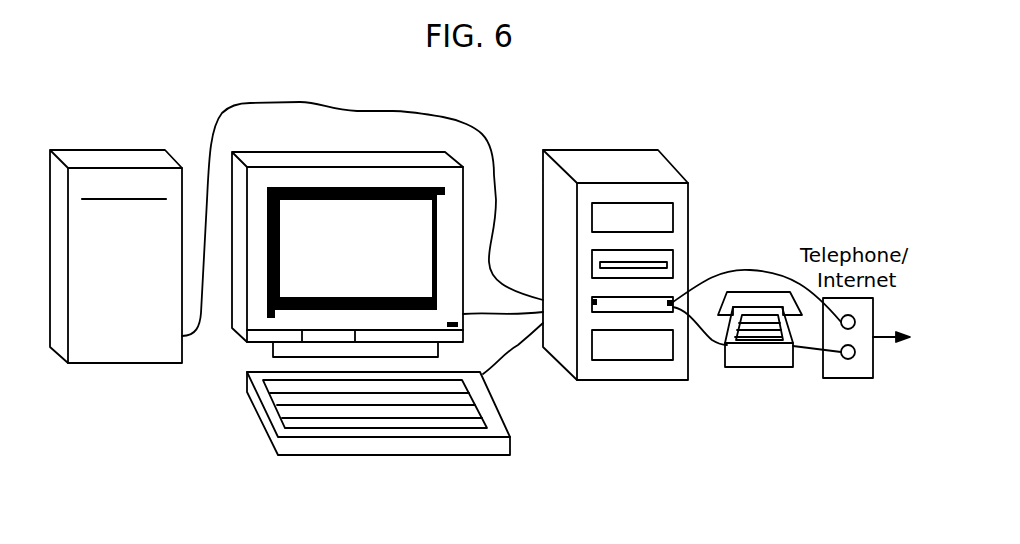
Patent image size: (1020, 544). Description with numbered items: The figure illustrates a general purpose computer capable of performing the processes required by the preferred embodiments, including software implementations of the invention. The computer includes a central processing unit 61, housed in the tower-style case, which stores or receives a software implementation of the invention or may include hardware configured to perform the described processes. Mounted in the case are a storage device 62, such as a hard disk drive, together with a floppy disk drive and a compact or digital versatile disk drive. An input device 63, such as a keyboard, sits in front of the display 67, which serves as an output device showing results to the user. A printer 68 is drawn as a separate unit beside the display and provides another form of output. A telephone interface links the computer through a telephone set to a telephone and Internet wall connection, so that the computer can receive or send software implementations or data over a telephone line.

The central processing unit 61 is at (688, 188).
The storage device 62 is at (622, 358).
The input device 63 is at (673, 262).
The display monitor 67 is at (239, 322).
The printer 68 is at (137, 325).